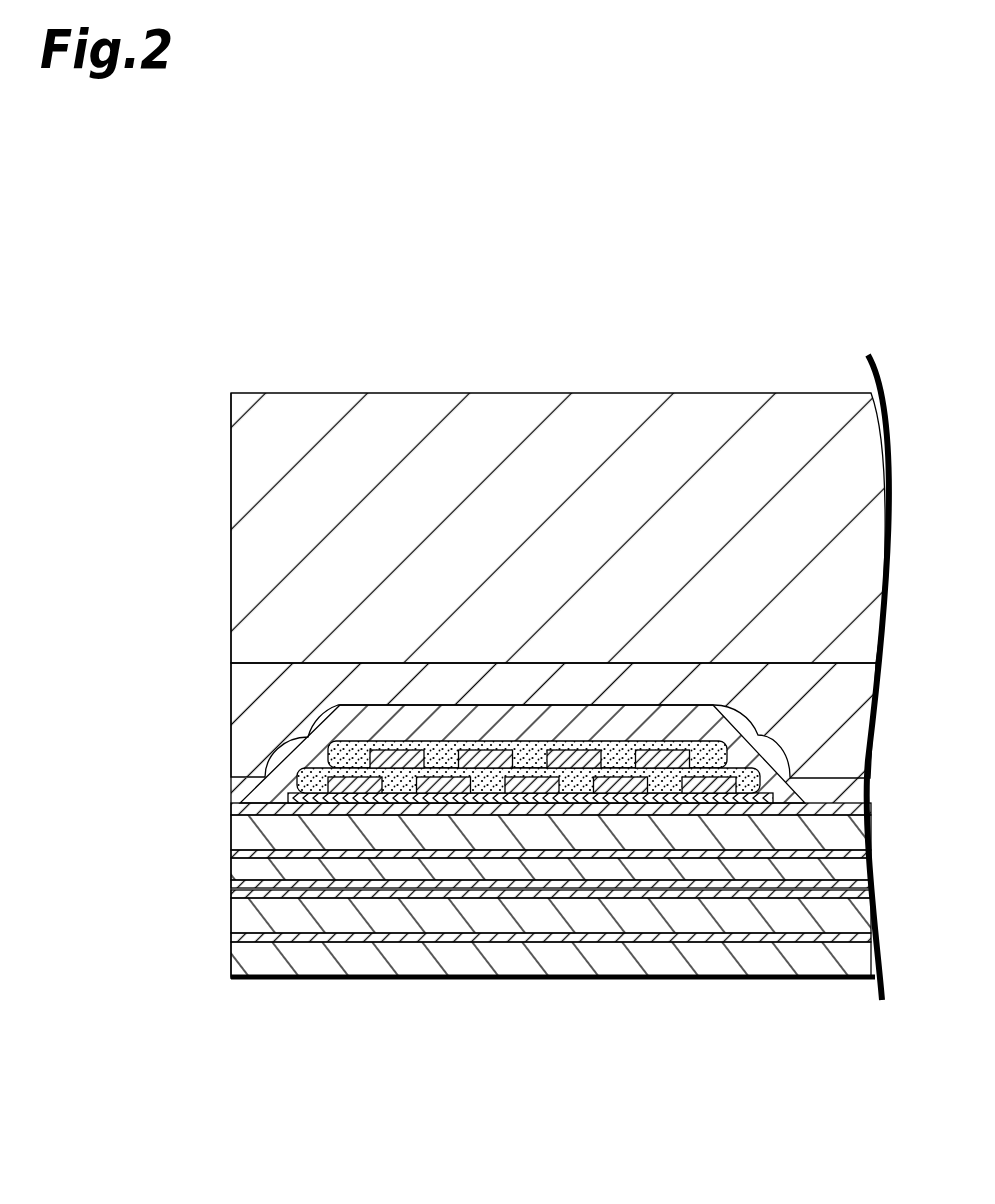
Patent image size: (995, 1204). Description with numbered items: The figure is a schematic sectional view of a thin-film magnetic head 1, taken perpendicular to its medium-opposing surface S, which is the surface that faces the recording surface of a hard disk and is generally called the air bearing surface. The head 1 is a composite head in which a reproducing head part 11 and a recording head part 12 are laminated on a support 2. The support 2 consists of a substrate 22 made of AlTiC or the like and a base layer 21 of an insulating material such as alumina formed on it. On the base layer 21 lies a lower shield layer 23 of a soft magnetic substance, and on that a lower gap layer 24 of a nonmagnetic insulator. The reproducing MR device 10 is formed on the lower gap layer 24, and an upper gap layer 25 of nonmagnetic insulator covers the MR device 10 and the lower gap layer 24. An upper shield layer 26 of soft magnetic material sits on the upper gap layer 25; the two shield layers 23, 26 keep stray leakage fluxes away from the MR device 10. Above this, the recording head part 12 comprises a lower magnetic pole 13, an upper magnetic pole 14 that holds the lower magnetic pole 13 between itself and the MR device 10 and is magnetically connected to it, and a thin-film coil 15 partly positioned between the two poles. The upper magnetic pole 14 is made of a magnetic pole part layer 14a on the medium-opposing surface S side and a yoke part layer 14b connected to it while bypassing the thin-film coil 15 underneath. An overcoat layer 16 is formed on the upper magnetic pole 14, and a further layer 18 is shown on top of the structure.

The thin-film magnetic head 1 is at (176, 311).
The medium-opposing surface S is at (218, 563).
The sealing member 18 is at (231, 485).
The overcoat layer 16 is at (231, 677).
The recording head part 12 is at (78, 680).
The upper magnetic pole 14 is at (134, 692).
The yoke part layer 14b is at (306, 736).
The magnetic pole part layer 14a is at (288, 777).
The lower magnetic pole 13 is at (238, 830).
The thin-film coil 15 is at (353, 788).
The reproducing head part 11 is at (86, 815).
The upper shield layer 26 is at (227, 858).
The upper gap layer 25 is at (228, 872).
The MR device 10 is at (227, 890).
The lower gap layer 24 is at (223, 898).
The lower shield layer 23 is at (223, 910).
The support 2 is at (128, 963).
The base layer 21 is at (222, 940).
The substrate 22 is at (253, 953).